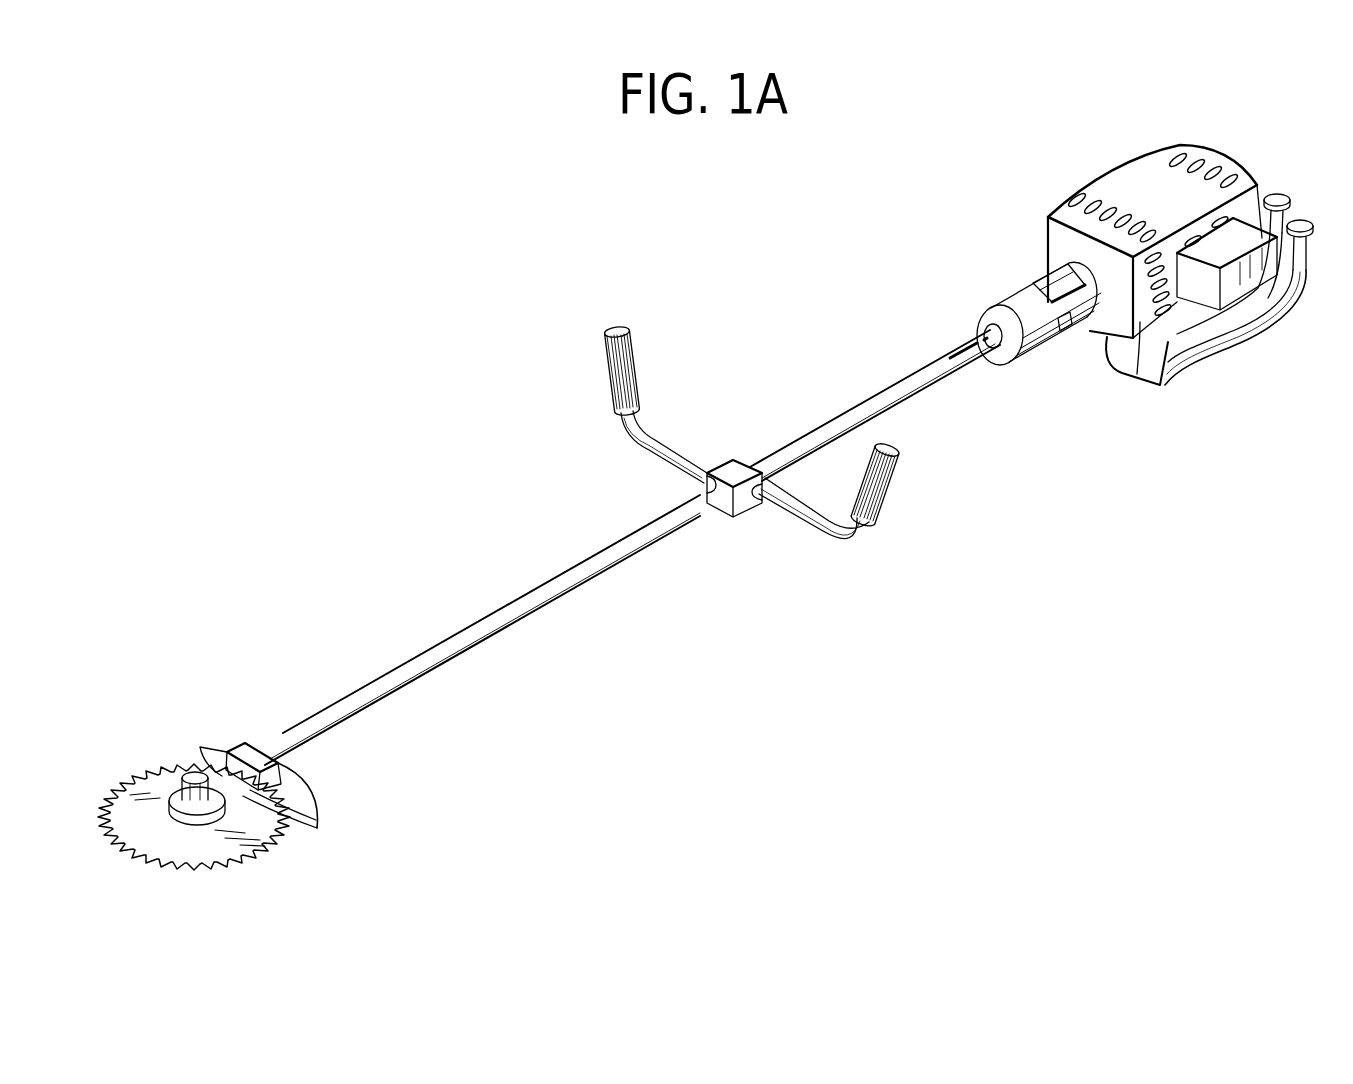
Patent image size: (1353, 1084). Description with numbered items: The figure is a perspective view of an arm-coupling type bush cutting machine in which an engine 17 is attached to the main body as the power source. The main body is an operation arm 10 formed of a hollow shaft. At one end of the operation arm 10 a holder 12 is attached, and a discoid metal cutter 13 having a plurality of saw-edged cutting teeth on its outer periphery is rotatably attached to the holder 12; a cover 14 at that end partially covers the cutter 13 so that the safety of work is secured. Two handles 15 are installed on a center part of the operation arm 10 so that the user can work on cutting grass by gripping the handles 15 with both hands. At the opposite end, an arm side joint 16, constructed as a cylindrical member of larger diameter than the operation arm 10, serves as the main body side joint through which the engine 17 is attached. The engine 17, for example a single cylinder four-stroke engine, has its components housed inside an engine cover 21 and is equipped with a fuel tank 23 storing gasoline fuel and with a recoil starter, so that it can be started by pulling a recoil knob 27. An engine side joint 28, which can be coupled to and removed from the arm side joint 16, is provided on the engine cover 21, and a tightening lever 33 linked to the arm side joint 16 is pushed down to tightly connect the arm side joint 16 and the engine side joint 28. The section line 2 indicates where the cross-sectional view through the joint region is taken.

The section line 2 is at (953, 353).
The operation arm 10 is at (487, 620).
The holder 12 is at (192, 770).
The metal cutter 13 is at (228, 848).
The cover 14 is at (303, 792).
The handles 15 is at (608, 360).
The arm side joint 16 is at (1015, 301).
The engine 17 is at (1135, 183).
The engine cover 21 is at (1140, 325).
The fuel tank 23 is at (1240, 327).
The recoil knob 27 is at (1275, 194).
The engine side joint 28 is at (1047, 282).
The tightening lever 33 is at (1058, 332).